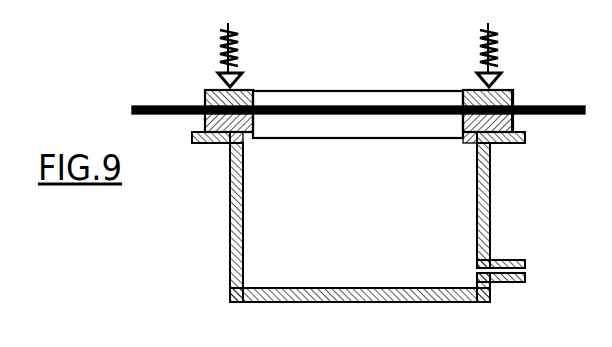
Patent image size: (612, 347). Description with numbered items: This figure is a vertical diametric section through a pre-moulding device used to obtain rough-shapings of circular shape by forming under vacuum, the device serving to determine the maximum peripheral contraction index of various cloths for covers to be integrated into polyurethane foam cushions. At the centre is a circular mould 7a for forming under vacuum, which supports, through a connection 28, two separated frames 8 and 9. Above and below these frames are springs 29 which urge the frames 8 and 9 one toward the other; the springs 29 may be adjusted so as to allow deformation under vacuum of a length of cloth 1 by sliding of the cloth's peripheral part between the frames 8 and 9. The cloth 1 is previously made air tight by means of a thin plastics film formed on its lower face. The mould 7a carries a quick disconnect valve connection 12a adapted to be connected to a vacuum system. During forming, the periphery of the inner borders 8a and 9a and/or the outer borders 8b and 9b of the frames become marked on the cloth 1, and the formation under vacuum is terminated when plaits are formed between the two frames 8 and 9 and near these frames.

The length of cloth 1 is at (340, 104).
The mould 7a is at (480, 207).
The frame 8 is at (208, 92).
The inner border of frame 8 8a is at (463, 100).
The outer border of frame 8 8b is at (513, 93).
The frame 9 is at (207, 120).
The inner border of frame 9 9a is at (465, 125).
The outer border of frame 9 9b is at (513, 122).
The quick disconnect valve connection 12a is at (508, 263).
The connection 28 is at (496, 140).
The springs 29 is at (222, 50).